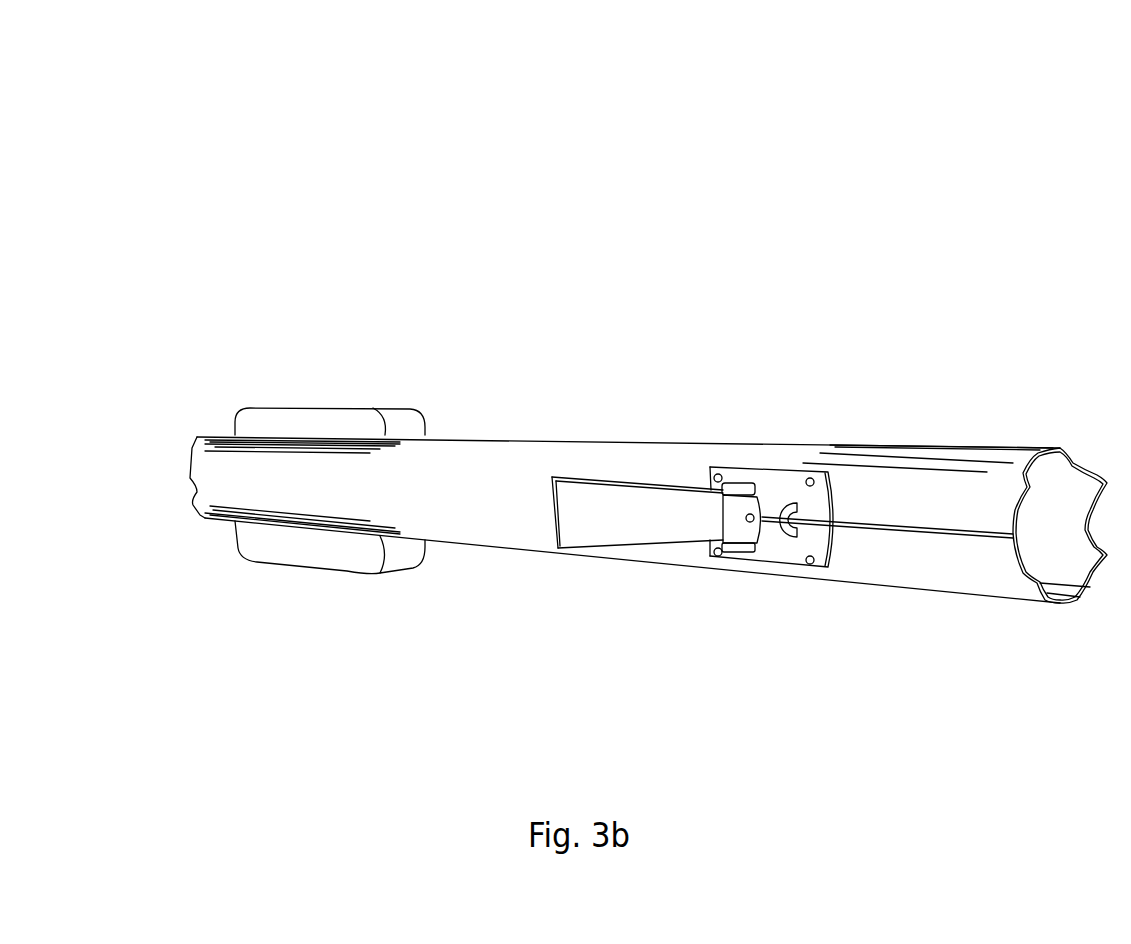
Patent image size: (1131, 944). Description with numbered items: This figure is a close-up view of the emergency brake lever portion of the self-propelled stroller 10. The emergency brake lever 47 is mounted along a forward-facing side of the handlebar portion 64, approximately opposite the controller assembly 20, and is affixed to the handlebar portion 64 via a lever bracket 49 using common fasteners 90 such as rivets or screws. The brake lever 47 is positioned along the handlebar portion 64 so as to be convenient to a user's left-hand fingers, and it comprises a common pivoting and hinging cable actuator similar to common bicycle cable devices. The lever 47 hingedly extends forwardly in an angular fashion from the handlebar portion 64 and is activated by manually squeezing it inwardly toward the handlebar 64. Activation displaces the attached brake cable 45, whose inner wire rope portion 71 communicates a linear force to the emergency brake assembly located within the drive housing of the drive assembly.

The self-propelled stroller 10 is at (1048, 193).
The controller assembly 20 is at (317, 367).
The brake cable 45 is at (950, 535).
The emergency brake lever 47 is at (605, 533).
The lever bracket 49 is at (738, 483).
The handlebar portion 64 is at (478, 478).
The inner wire rope portion 71 is at (769, 521).
The fasteners 90 is at (713, 481).